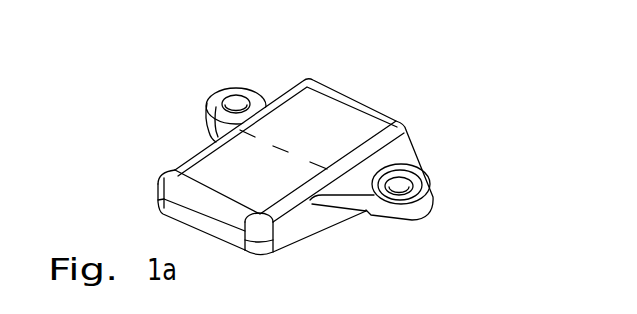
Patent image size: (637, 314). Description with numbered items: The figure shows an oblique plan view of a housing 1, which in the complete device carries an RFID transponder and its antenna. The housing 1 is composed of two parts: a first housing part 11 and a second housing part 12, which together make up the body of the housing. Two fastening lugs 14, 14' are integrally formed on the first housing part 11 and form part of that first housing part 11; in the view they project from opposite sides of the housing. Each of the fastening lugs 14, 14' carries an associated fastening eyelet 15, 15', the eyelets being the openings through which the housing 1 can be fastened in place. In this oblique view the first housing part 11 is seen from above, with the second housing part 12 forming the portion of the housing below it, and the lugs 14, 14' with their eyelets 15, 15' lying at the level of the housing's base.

The housing 1 is at (411, 99).
The first housing part 11 is at (333, 116).
The second housing part 12 is at (213, 165).
The fastening lug 14 is at (213, 95).
The fastening eyelet 15 is at (252, 70).
The fastening lug 14' is at (415, 185).
The fastening eyelet 15' is at (440, 146).